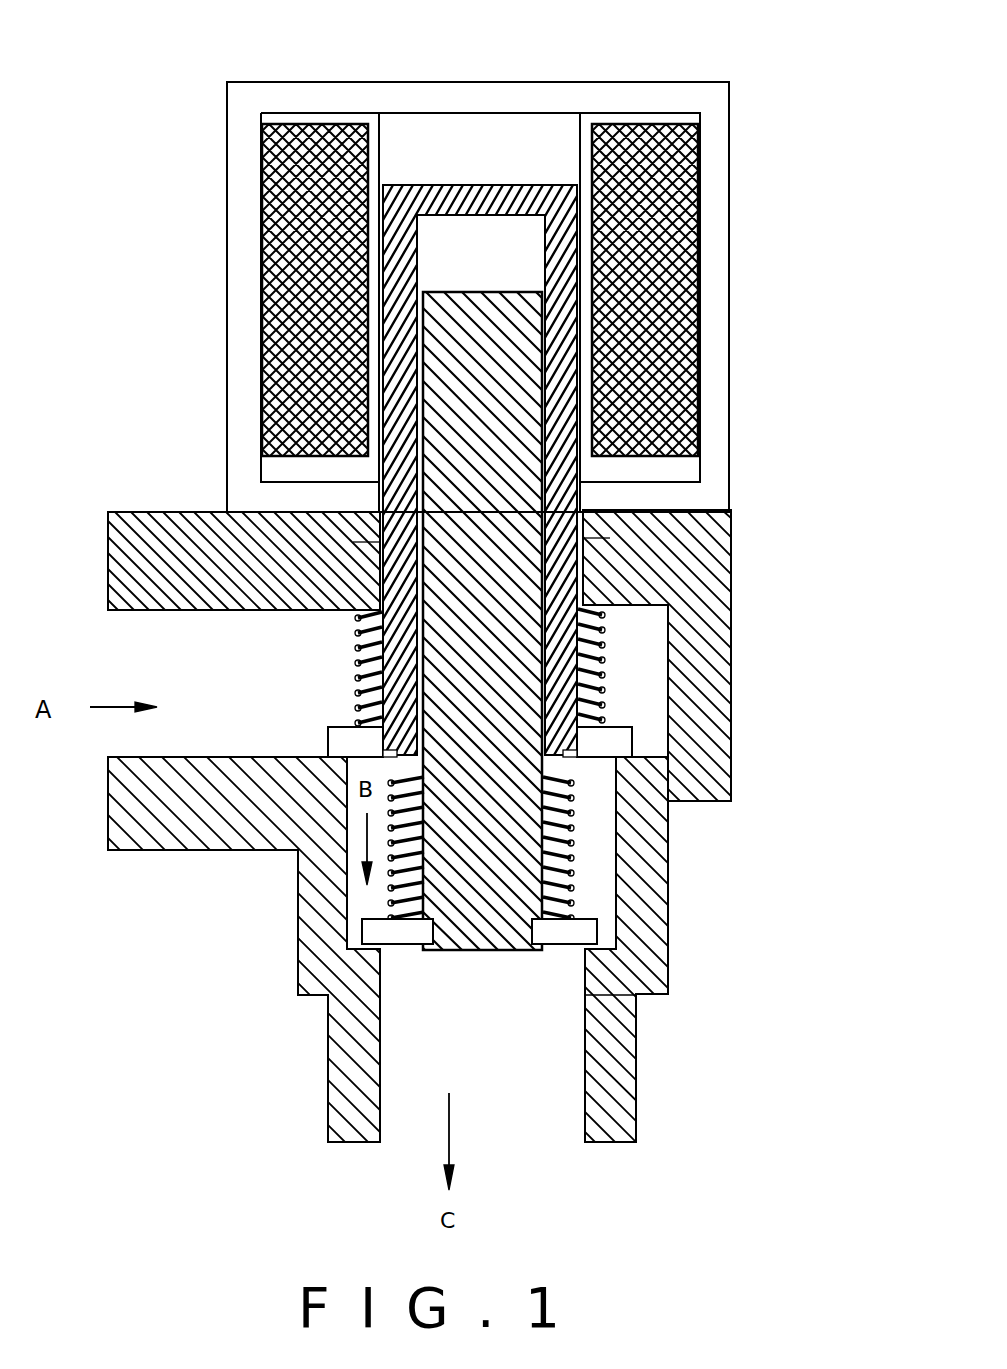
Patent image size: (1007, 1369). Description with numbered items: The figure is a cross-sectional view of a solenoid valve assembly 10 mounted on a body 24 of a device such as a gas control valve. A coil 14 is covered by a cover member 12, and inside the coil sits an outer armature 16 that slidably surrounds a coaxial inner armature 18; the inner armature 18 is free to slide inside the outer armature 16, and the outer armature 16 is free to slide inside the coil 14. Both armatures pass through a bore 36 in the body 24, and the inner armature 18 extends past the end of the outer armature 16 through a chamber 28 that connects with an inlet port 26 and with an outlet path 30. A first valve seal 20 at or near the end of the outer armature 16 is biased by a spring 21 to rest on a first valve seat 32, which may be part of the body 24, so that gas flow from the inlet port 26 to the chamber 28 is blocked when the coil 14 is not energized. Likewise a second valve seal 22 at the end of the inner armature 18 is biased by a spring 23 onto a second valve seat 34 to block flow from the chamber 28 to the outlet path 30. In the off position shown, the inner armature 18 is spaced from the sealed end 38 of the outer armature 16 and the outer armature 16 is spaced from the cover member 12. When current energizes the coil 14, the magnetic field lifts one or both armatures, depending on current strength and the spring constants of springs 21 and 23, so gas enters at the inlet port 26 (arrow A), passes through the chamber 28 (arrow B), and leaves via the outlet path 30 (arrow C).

The solenoid valve assembly 10 is at (178, 282).
The cover member 12 is at (688, 90).
The coil 14 is at (655, 222).
The outer armature 16 is at (562, 350).
The inner armature 18 is at (483, 510).
The first valve seal 20 is at (598, 738).
The spring 21 is at (600, 660).
The second valve seal 22 is at (585, 937).
The spring 23 is at (571, 890).
The body 24 is at (708, 725).
The inlet port 26 is at (232, 658).
The chamber 28 is at (367, 892).
The outlet path 30 is at (518, 1042).
The first valve seat 32 is at (625, 772).
The second valve seat 34 is at (593, 955).
The bore 36 is at (380, 558).
The sealed end 38 is at (466, 185).